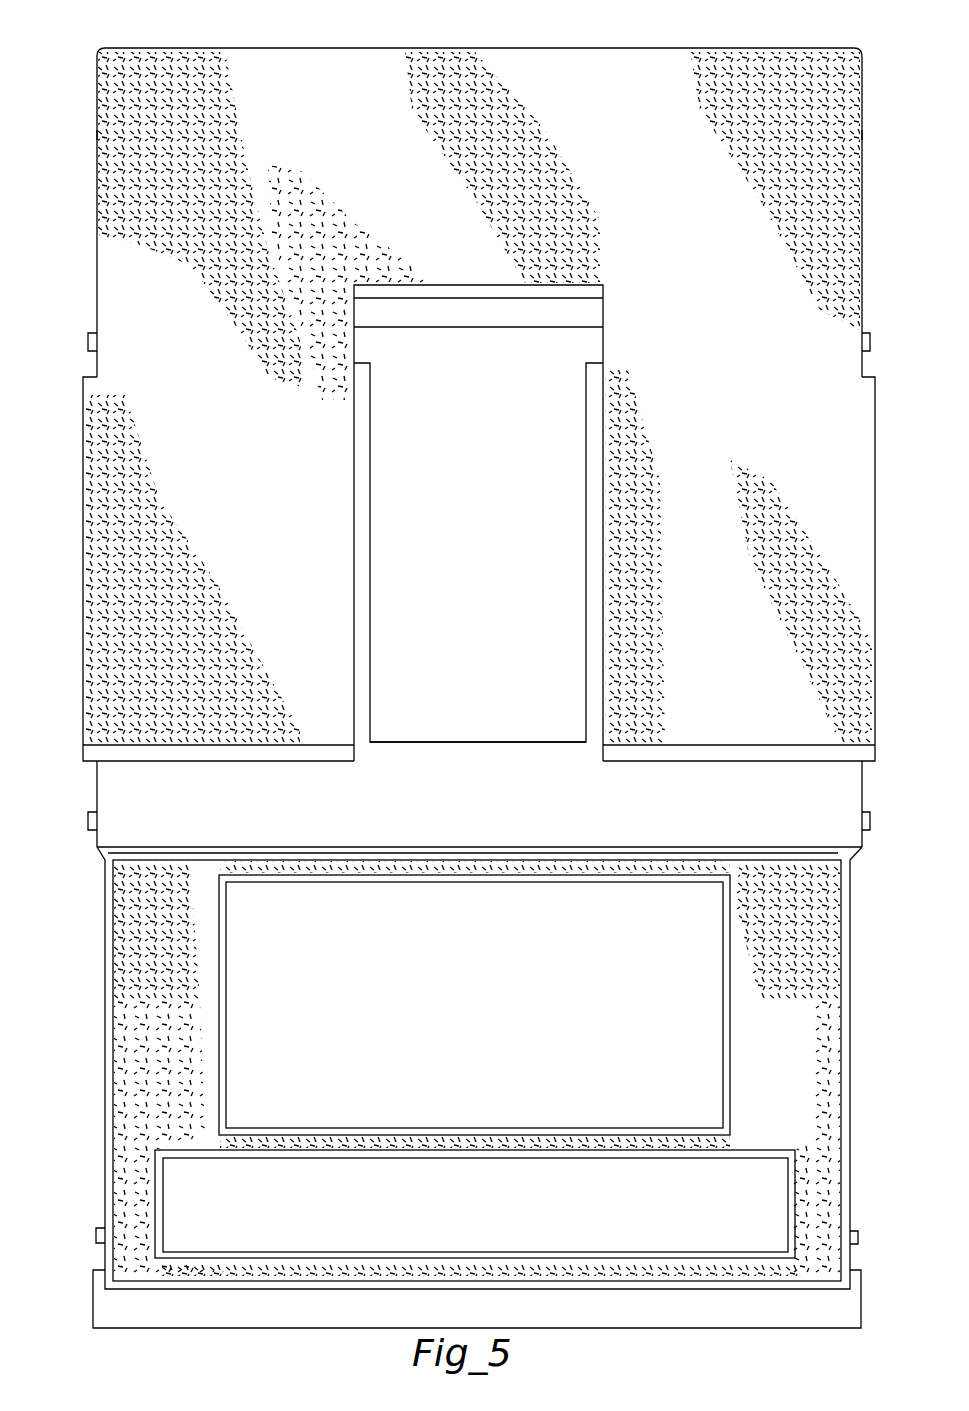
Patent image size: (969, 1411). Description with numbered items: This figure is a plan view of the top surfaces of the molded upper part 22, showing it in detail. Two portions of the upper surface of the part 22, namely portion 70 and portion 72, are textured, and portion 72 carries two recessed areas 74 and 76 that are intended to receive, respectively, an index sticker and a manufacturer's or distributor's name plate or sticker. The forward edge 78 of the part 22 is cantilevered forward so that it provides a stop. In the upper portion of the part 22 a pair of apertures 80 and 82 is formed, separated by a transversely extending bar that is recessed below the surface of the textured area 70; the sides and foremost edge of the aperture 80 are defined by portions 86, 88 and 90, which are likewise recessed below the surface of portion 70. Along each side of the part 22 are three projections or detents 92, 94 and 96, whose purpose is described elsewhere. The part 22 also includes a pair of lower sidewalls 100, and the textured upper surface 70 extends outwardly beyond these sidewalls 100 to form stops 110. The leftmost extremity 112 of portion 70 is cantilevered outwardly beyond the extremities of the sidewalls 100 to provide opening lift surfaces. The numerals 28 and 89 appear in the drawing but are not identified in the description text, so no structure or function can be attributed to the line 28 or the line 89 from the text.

The upper part 22 is at (75, 644).
The fold line 28 is at (160, 854).
The textured portion 70 is at (98, 566).
The textured portion 72 is at (118, 1054).
The recessed area 74 is at (483, 988).
The recessed area 76 is at (483, 1220).
The forward edge 78 is at (376, 1312).
The aperture 80 is at (582, 640).
The aperture 82 is at (528, 291).
The recessed portion 86 is at (371, 558).
The recessed portion 88 is at (587, 555).
The score line 89 is at (452, 311).
The recessed portion 90 is at (498, 802).
The projection or detent 92 is at (96, 1236).
The projection or detent 94 is at (84, 822).
The projection or detent 96 is at (88, 345).
The lower sidewall 100 is at (97, 183).
The stop 110 is at (82, 464).
The leftmost extremity 112 is at (238, 48).